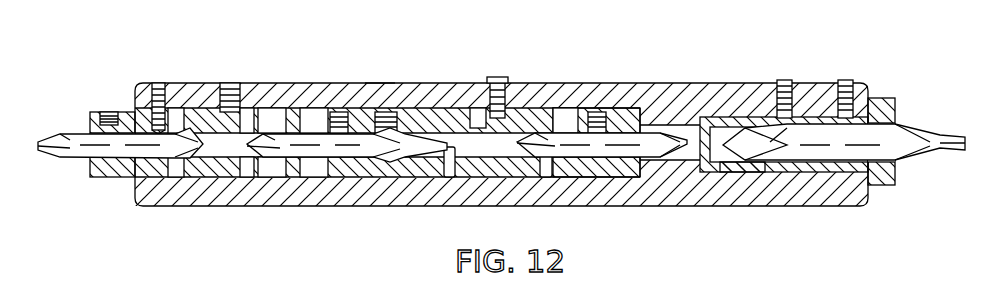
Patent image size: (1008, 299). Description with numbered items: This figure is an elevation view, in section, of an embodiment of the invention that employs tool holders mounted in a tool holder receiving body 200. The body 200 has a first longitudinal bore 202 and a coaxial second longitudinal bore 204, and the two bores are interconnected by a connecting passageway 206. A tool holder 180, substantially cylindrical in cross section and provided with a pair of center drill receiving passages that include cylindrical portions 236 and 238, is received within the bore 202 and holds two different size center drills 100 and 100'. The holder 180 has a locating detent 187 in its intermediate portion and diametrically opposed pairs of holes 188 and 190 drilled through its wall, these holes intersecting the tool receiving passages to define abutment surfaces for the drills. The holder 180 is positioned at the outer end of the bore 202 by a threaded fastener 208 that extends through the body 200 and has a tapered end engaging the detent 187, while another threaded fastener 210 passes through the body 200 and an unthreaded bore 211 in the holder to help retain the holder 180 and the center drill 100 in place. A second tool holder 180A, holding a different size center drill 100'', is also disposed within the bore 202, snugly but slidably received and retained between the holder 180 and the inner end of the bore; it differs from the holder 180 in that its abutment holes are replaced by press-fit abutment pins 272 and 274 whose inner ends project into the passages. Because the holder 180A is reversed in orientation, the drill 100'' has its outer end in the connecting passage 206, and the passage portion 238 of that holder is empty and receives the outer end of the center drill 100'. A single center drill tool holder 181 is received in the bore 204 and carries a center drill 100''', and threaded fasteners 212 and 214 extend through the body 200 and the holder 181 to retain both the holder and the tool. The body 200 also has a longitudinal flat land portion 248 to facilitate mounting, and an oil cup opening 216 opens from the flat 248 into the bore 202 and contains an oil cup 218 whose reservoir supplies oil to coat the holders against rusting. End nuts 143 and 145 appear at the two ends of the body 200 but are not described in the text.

The center drill 100 is at (120, 178).
The center drill 100' is at (347, 180).
The center drill 100'' is at (607, 183).
The center drill 100''' is at (844, 177).
The end nut 143 is at (136, 97).
The end nut 145 is at (878, 188).
The tool holder 180 is at (228, 170).
The second tool holder 180A is at (525, 112).
The single center drill tool holder 181 is at (830, 175).
The locating detent 187 is at (247, 112).
The holes 188 is at (176, 110).
The holes 190 is at (283, 110).
The tool holder receiving body 200 is at (452, 210).
The first longitudinal bore 202 is at (355, 112).
The second longitudinal bore 204 is at (765, 170).
The connecting passageway 206 is at (690, 125).
The threaded fastener 208 is at (228, 83).
The threaded fastener 210 is at (158, 83).
The unthreaded bore 211 is at (165, 88).
The threaded fastener 212 is at (785, 80).
The threaded fastener 214 is at (848, 80).
The oil cup opening 216 is at (478, 83).
The oil cup 218 is at (500, 77).
The cylindrical portion 236 is at (594, 114).
The cylindrical portion 238 is at (410, 128).
The flat land portion 248 is at (380, 83).
The abutment pin 272 is at (548, 170).
The abutment pin 274 is at (452, 170).